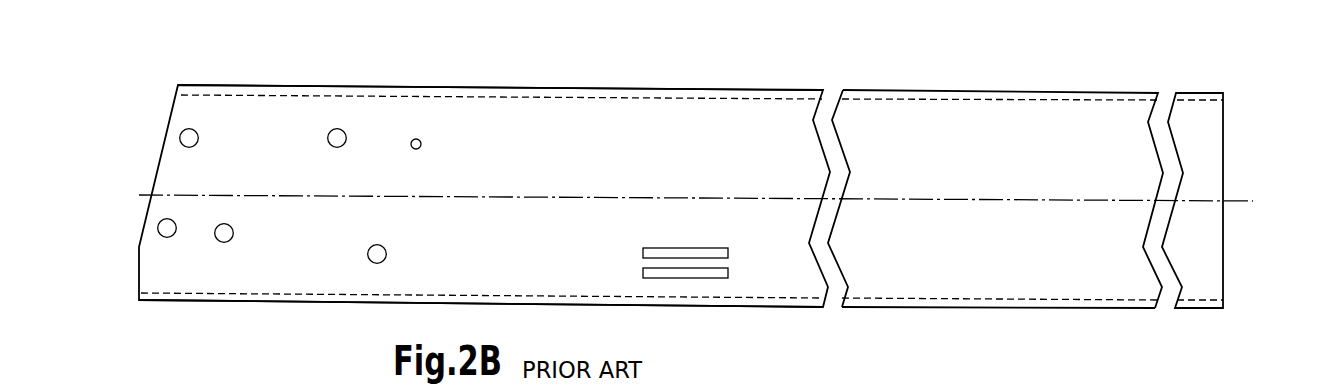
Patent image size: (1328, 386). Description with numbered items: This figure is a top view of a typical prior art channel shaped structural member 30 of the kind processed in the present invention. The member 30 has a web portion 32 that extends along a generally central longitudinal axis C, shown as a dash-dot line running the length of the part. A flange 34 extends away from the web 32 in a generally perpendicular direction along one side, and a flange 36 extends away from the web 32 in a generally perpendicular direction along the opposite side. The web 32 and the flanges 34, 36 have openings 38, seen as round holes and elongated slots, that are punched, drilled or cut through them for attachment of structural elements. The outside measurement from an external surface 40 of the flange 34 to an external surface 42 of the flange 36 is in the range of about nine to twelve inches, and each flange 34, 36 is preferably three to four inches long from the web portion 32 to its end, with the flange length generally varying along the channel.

The channel shaped structural member 30 is at (731, 189).
The web portion 32 is at (678, 150).
The flange 34 is at (928, 91).
The flange 36 is at (953, 308).
The openings 38 is at (331, 144).
The external surface of the flange 40 is at (493, 89).
The external surface of the flange 42 is at (548, 306).
The central longitudinal axis C is at (1235, 202).